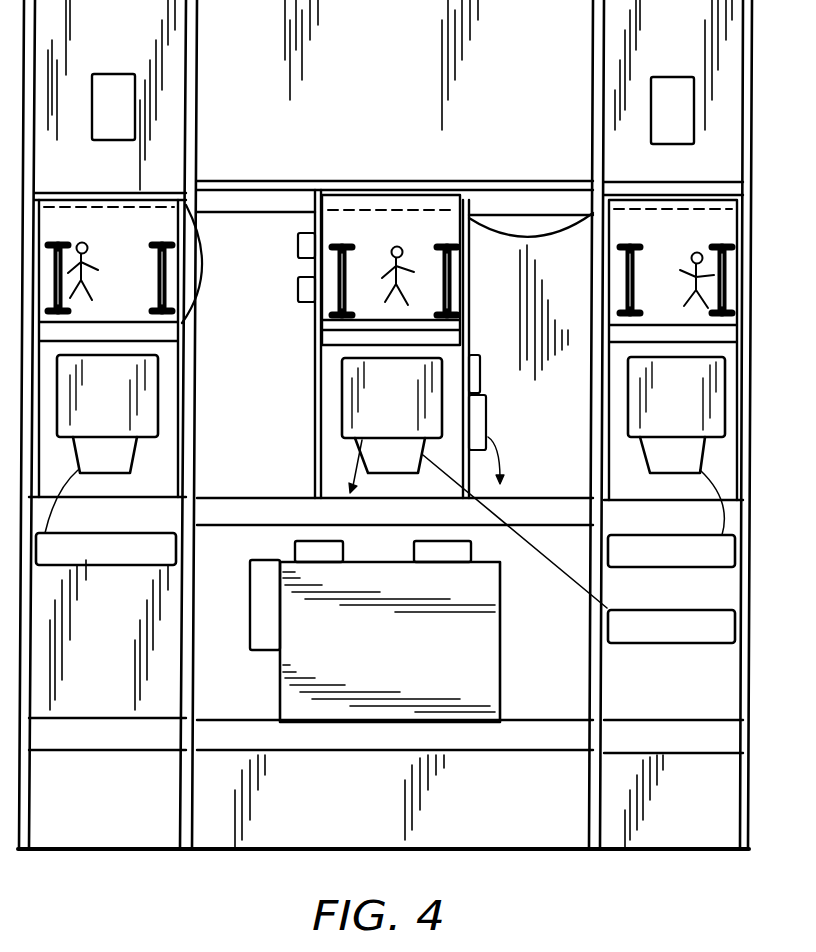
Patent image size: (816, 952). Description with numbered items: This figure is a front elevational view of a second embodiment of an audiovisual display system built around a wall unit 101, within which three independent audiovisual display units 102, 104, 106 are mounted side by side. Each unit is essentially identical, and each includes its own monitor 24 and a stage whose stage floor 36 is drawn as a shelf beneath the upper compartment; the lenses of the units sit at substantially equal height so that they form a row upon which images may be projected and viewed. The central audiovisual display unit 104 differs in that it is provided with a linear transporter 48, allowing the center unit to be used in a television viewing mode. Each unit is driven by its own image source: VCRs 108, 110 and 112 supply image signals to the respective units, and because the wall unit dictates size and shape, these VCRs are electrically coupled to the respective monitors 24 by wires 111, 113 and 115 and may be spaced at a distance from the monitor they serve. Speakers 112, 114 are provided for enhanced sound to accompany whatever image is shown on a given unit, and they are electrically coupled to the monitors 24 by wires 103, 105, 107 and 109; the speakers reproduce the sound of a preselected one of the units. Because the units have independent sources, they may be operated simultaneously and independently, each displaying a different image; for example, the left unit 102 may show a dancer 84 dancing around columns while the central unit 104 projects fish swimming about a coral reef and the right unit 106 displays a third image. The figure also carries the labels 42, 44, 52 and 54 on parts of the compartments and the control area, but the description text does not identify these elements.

The monitor 24 is at (112, 425).
The stage floor 36 is at (330, 340).
The upper display compartment 42 is at (136, 200).
The pillar 44 is at (57, 245).
The linear transporter 48 is at (509, 440).
The card reader 52 is at (481, 370).
The keypad 54 is at (487, 410).
The dancer 84 is at (86, 266).
The wall unit 101 is at (740, 465).
The audiovisual display unit 102 is at (102, 222).
The wire 103 is at (204, 272).
The central audiovisual display unit 104 is at (368, 225).
The wire 105 is at (290, 322).
The audiovisual display unit 106 is at (702, 221).
The wire 107 is at (477, 294).
The VCR 108 is at (106, 551).
The wire 109 is at (566, 237).
The VCR 110 is at (671, 630).
The wire 111 is at (76, 468).
The speaker 112 is at (118, 82).
The wire 113 is at (549, 565).
The speaker 114 is at (683, 70).
The wire 115 is at (712, 522).